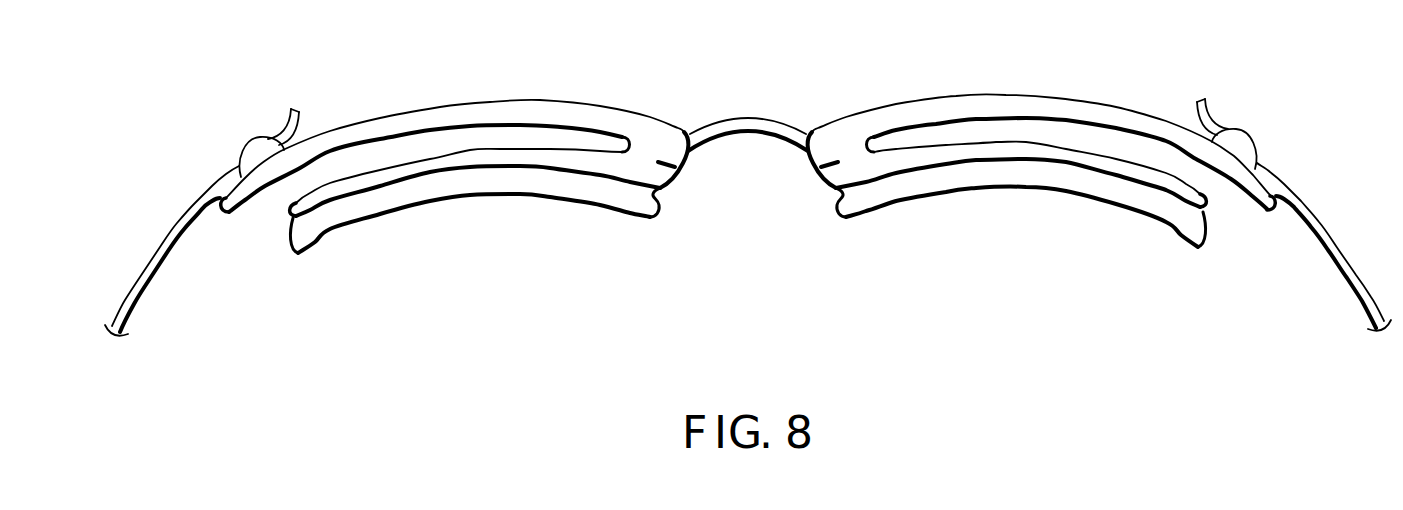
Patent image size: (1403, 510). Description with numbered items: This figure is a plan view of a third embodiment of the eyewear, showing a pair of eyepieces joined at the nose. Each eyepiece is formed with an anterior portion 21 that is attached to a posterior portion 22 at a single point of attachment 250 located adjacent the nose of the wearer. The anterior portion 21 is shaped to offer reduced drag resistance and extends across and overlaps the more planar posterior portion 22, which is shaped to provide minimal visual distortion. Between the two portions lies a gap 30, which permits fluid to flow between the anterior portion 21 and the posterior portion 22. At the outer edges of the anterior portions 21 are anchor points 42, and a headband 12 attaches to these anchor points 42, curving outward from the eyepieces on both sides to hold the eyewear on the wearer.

The headband 12 is at (1320, 216).
The anterior portion 21 is at (492, 108).
The posterior portion 22 is at (457, 158).
The gap 30 is at (402, 143).
The anchor point 42 is at (254, 150).
The single point of attachment 250 is at (673, 166).